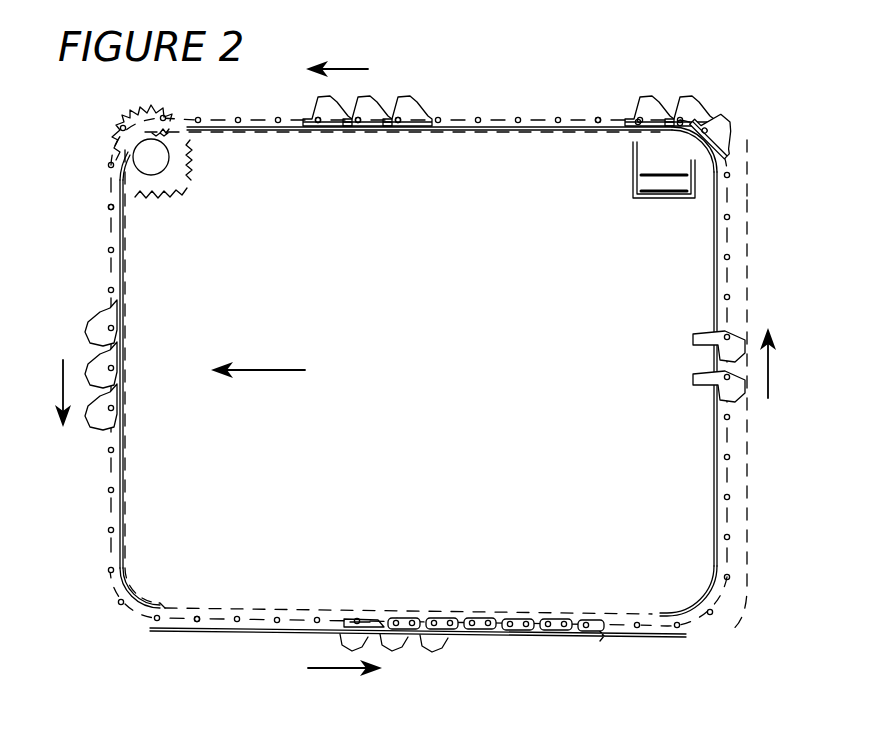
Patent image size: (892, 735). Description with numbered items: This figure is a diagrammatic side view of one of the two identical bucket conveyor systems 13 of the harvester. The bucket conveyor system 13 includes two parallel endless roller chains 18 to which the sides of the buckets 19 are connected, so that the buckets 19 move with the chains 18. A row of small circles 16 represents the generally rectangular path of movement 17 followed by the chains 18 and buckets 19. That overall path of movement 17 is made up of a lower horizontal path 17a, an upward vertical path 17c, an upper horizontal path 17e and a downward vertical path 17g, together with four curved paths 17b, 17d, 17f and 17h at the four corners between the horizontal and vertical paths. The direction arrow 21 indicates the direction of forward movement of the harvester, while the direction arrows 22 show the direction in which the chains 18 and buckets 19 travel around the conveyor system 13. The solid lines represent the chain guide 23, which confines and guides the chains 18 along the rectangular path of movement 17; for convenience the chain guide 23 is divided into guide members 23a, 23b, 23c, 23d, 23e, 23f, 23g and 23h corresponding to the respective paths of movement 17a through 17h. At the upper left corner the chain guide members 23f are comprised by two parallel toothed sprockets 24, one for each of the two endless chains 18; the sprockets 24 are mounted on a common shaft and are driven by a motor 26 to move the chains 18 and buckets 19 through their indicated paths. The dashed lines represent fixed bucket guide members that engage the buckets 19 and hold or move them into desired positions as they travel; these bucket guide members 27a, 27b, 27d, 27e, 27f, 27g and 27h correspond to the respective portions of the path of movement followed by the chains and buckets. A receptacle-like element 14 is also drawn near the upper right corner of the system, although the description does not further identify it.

The bucket conveyor system 13 is at (634, 79).
The receptacle 14 is at (626, 186).
The small circles 16 is at (109, 207).
The path of movement 17 is at (262, 618).
The lower horizontal path 17a is at (305, 620).
The curved path 17b is at (722, 590).
The upward vertical path 17c is at (722, 435).
The curved path 17d is at (737, 143).
The upper horizontal path 17e is at (512, 124).
The curved path 17f is at (116, 146).
The downward vertical path 17g is at (112, 272).
The curved path 17h is at (113, 592).
The endless roller chains 18 is at (483, 623).
The buckets 19 is at (398, 106).
The direction arrow 21 is at (290, 370).
The direction arrows 22 is at (348, 69).
The chain guide 23 is at (124, 488).
The chain guide member 23a is at (267, 630).
The chain guide member 23b is at (690, 610).
The chain guide member 23c is at (714, 494).
The chain guide member 23d is at (725, 167).
The chain guide member 23e is at (542, 128).
The chain guide members 23f is at (122, 126).
The chain guide member 23g is at (118, 462).
The chain guide member 23h is at (137, 617).
The toothed sprockets 24 is at (177, 165).
The motor 26 is at (163, 171).
The bucket guide member 27a is at (322, 610).
The bucket guide member 27b is at (737, 618).
The bucket guide member 27d is at (690, 135).
The bucket guide member 27e is at (475, 140).
The bucket guide member 27f is at (152, 133).
The bucket guide member 27g is at (127, 267).
The bucket guide member 27h is at (127, 580).